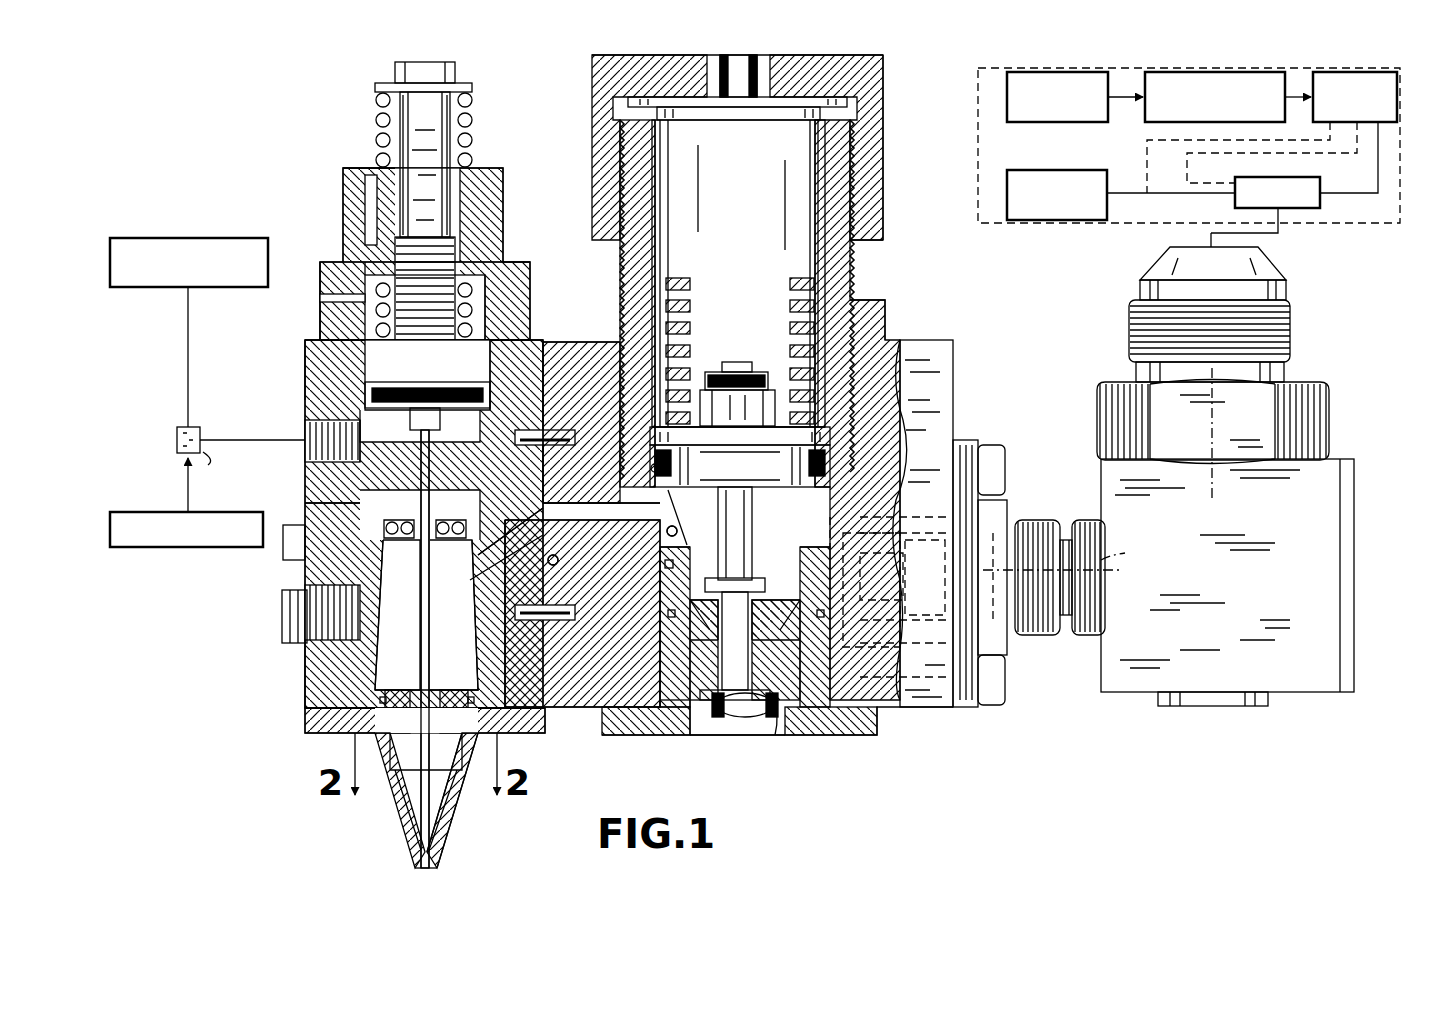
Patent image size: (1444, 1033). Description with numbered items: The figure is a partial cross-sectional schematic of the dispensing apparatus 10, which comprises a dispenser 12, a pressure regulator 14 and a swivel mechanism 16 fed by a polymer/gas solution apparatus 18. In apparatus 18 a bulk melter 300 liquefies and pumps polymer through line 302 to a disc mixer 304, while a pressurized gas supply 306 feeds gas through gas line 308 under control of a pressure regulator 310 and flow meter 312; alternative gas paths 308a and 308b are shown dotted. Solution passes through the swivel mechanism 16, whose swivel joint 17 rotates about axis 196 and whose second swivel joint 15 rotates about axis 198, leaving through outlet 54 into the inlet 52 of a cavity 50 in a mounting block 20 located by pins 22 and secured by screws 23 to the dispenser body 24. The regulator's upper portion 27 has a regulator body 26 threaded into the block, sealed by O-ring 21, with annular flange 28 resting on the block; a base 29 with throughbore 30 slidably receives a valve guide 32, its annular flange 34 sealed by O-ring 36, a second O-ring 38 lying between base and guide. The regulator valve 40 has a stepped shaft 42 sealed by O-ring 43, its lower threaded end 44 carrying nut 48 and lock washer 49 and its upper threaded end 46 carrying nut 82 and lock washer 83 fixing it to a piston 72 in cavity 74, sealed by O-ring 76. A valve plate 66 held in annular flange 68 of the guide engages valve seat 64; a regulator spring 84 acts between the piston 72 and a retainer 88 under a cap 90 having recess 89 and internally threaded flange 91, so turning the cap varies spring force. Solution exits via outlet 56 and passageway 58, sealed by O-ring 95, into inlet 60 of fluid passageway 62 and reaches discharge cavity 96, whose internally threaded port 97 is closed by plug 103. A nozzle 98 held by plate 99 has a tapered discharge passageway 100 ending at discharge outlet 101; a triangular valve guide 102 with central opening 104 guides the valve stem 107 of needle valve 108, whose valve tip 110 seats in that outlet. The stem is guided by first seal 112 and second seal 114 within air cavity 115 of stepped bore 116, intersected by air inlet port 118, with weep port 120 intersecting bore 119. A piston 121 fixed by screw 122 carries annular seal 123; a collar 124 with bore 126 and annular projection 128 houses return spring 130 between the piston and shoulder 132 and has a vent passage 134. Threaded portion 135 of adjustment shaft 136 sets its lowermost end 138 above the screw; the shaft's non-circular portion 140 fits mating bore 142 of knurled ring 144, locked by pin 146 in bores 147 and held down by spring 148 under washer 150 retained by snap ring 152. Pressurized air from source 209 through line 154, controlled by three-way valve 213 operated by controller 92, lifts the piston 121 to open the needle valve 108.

The dispensing apparatus 10 is at (1014, 263).
The dispenser 12 is at (300, 152).
The pressure regulator 14 is at (918, 162).
The second swivel joint 15 is at (1100, 484).
The swivel mechanism 16 is at (1100, 720).
The swivel joint 17 is at (1096, 416).
The polymer/gas solution apparatus 18 is at (1012, 230).
The mounting block 20 is at (927, 343).
The O-ring 21 is at (893, 454).
The pins 22 is at (562, 422).
The screws 23 is at (284, 560).
The dispenser body 24 is at (302, 381).
The regulator body 26 is at (876, 302).
The upper portion 27 is at (908, 244).
The annular flange 28 is at (894, 314).
The base 29 is at (868, 754).
The throughbore 30 is at (700, 740).
The valve guide 32 is at (856, 684).
The annular flange 34 is at (652, 745).
The O-ring 36 is at (822, 742).
The second O-ring 38 is at (893, 652).
The regulator valve 40 is at (772, 548).
The stepped shaft 42 is at (722, 522).
The O-ring 43 is at (661, 738).
The lower threaded end 44 is at (752, 746).
The upper threaded end 46 is at (735, 285).
The nut 48 is at (718, 742).
The lock washer 49 is at (780, 746).
The cavity 50 is at (888, 530).
The inlet 52 is at (858, 582).
The outlet 54 is at (908, 594).
The outlet 56 is at (667, 531).
The passageway 58 is at (590, 512).
The inlet 60 is at (558, 563).
The fluid passageway 62 is at (515, 536).
The valve seat 64 is at (668, 586).
The valve plate 66 is at (665, 622).
The annular flange 68 is at (668, 666).
The piston 72 is at (899, 398).
The cavity 74 is at (745, 288).
The O-ring 76 is at (702, 464).
The nut 82 is at (725, 371).
The lock washer 83 is at (762, 380).
The regulator spring 84 is at (704, 278).
The retainer 88 is at (750, 198).
The non-circular-shaped recess 89 is at (748, 100).
The cap 90 is at (868, 122).
The internally threaded flange 91 is at (885, 206).
The controller 92 is at (200, 548).
The O-ring 95 is at (566, 600).
The discharge cavity 96 is at (396, 602).
The internally threaded port 97 is at (305, 692).
The nozzle 98 is at (472, 833).
The plate 99 is at (305, 712).
The discharge passageway 100 is at (412, 770).
The discharge outlet 101 is at (441, 862).
The triangular-shaped valve guide 102 is at (488, 690).
The plug 103 is at (283, 624).
The central opening 104 is at (446, 690).
The valve stem 107 is at (424, 636).
The needle valve 108 is at (466, 801).
The valve tip 110 is at (415, 857).
The first seal 112 is at (462, 514).
The second seal 114 is at (515, 440).
The air cavity 115 is at (330, 413).
The stepped bore 116 is at (305, 363).
The air inlet port 118 is at (305, 463).
The bore 119 is at (528, 478).
The weep port 120 is at (305, 504).
The piston 121 is at (537, 341).
The screw 122 is at (486, 398).
The annular seal 123 is at (410, 426).
The collar 124 is at (318, 274).
The bore 126 is at (525, 282).
The annular projection 128 is at (530, 314).
The return spring 130 is at (515, 262).
The shoulder 132 is at (516, 238).
The vent passage 134 is at (330, 306).
The threaded portion 135 is at (332, 297).
The adjustment shaft 136 is at (498, 176).
The lowermost end 138 is at (368, 391).
The non-circular portion 140 is at (470, 121).
The mating bore 142 is at (505, 206).
The knurled ring 144 is at (345, 168).
The pin 146 is at (365, 188).
The bores 147 is at (366, 266).
The spring 148 is at (378, 101).
The washer 150 is at (474, 88).
The snap ring 152 is at (393, 72).
The line 154 is at (186, 380).
The axis 196 is at (1228, 490).
The axis 198 is at (1128, 553).
The source of pressurized air 209 is at (196, 238).
The three-way valve 213 is at (177, 447).
The bulk melter 300 is at (1030, 170).
The line 302 is at (1127, 195).
The disc mixer 304 is at (1306, 210).
The pressurized gas supply 306 is at (1026, 72).
The gas line 308 is at (1378, 230).
The alternative gas flow path 308a is at (1147, 165).
The alternative gas flow path 308b is at (1187, 183).
The pressure regulator 310 is at (1188, 72).
The flow meter 312 is at (1344, 72).